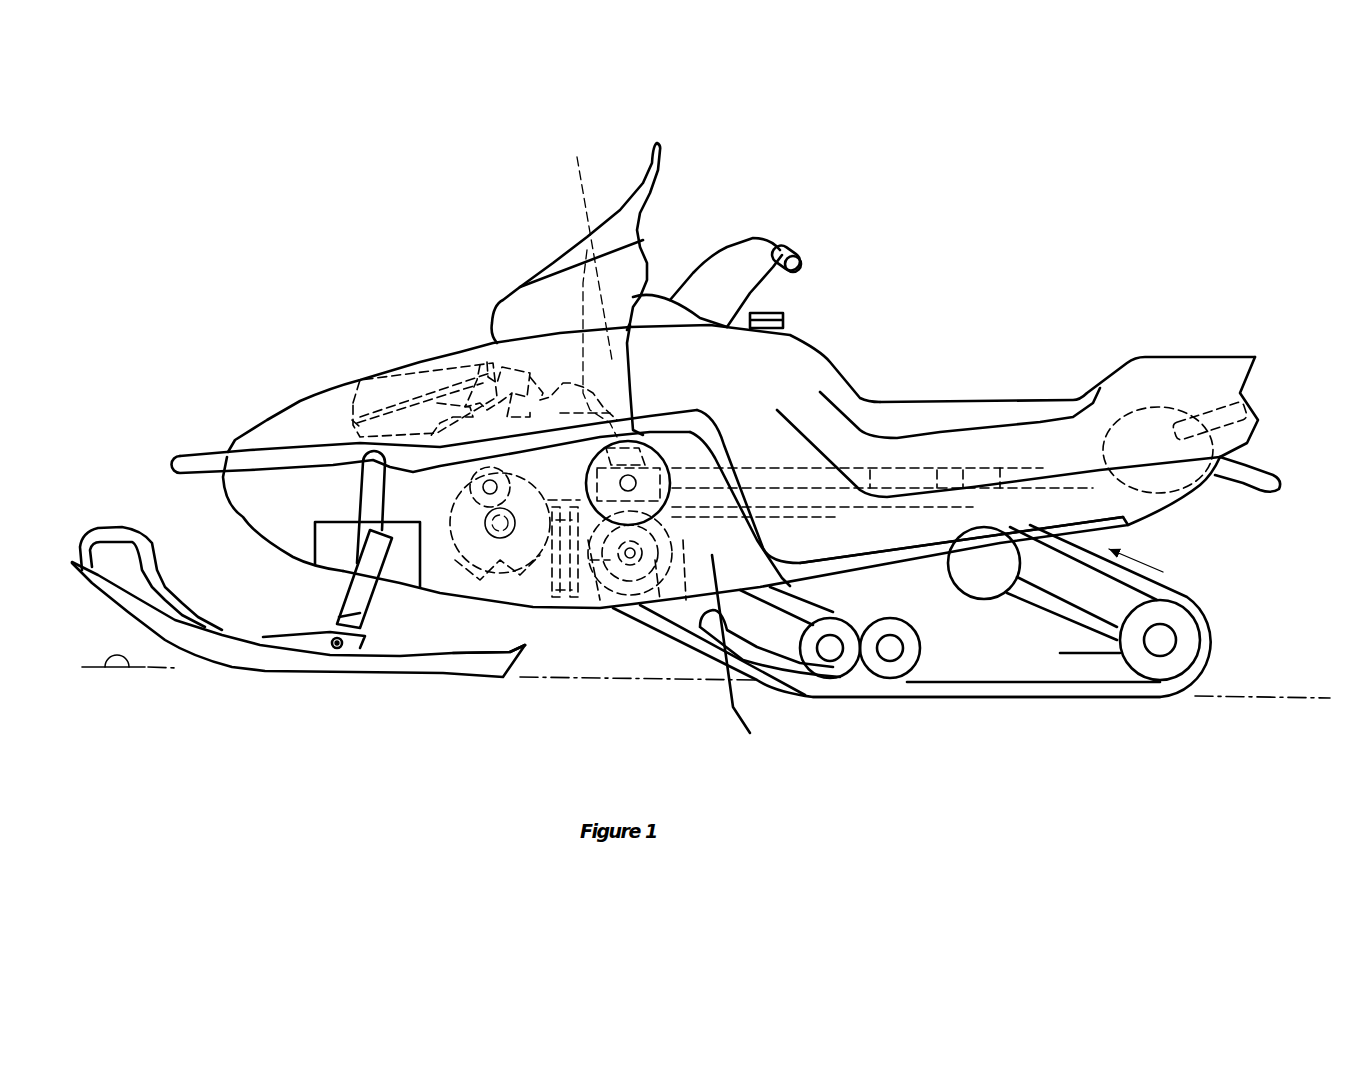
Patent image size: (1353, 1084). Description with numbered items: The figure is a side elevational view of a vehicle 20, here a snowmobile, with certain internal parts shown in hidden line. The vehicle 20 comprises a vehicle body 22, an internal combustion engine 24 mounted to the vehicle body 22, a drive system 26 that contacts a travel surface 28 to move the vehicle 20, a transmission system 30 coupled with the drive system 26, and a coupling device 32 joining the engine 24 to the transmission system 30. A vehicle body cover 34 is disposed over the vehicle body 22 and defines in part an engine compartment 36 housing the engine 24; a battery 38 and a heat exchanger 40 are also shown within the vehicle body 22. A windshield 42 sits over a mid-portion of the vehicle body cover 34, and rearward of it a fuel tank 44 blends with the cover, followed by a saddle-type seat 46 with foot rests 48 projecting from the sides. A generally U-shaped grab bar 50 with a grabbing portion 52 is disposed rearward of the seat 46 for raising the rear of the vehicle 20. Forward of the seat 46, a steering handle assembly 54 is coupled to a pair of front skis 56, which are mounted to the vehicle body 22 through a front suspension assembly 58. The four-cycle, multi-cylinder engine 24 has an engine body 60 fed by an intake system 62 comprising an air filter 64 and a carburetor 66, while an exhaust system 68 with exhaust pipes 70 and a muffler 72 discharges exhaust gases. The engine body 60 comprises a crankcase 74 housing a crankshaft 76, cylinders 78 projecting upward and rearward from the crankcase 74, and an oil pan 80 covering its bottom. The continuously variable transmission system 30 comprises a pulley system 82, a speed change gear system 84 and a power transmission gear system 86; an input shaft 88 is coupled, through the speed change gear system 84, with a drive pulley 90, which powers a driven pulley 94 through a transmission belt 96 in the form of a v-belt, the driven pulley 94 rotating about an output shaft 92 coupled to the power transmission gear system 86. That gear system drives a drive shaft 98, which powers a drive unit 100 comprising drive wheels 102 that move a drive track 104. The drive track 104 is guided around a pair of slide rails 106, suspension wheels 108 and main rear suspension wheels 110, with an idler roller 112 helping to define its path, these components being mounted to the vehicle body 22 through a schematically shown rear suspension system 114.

The vehicle 20 is at (1135, 222).
The vehicle body 22 is at (838, 270).
The internal combustion engine 24 is at (503, 362).
The drive system 26 is at (989, 699).
The travel surface 28 is at (127, 671).
The transmission system 30 is at (643, 425).
The coupling device 32 is at (389, 538).
The vehicle body cover 34 is at (240, 435).
The engine compartment 36 is at (586, 281).
The battery 38 is at (440, 477).
The heat exchanger 40 is at (556, 600).
The windshield 42 is at (613, 223).
The fuel tank 44 is at (790, 357).
The seat 46 is at (980, 417).
The foot rests 48 is at (903, 547).
The grab bar 50 is at (1265, 448).
The grabbing portion 52 is at (1277, 474).
The steering handle assembly 54 is at (786, 250).
The front skis 56 is at (262, 676).
The front suspension assembly 58 is at (373, 527).
The engine body 60 is at (543, 367).
The intake system 62 is at (368, 393).
The air filter 64 is at (408, 380).
The carburetor 66 is at (530, 413).
The exhaust system 68 is at (1045, 466).
The exhaust pipes 70 is at (847, 470).
The muffler 72 is at (1177, 428).
The crankcase 74 is at (440, 540).
The crankshaft 76 is at (520, 560).
The cylinders 78 is at (568, 380).
The oil pan 80 is at (486, 530).
The pulley system 82 is at (558, 607).
The speed change gear system 84 is at (520, 645).
The power transmission gear system 86 is at (605, 620).
The input shaft 88 is at (455, 728).
The drive pulley 90 is at (495, 580).
The output shaft 92 is at (651, 446).
The driven pulley 94 is at (736, 659).
The transmission belt 96 is at (605, 592).
The drive shaft 98 is at (640, 600).
The drive unit 100 is at (660, 560).
The drive wheels 102 is at (683, 540).
The drive track 104 is at (1050, 700).
The slide rails 106 is at (787, 662).
The suspension wheels 108 is at (840, 670).
The main rear suspension wheels 110 is at (1150, 663).
The idler roller 112 is at (993, 592).
The rear suspension system 114 is at (893, 573).